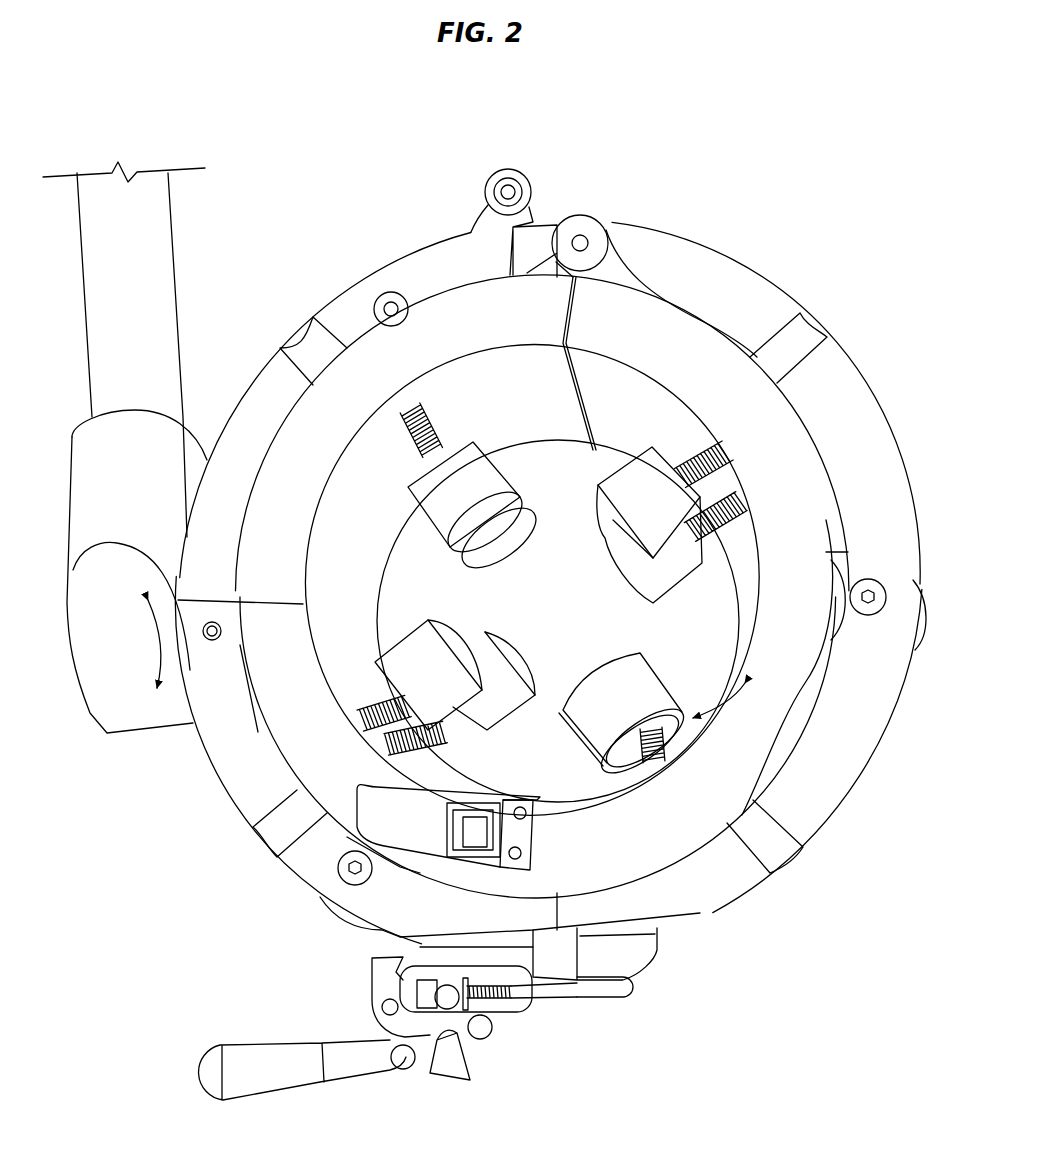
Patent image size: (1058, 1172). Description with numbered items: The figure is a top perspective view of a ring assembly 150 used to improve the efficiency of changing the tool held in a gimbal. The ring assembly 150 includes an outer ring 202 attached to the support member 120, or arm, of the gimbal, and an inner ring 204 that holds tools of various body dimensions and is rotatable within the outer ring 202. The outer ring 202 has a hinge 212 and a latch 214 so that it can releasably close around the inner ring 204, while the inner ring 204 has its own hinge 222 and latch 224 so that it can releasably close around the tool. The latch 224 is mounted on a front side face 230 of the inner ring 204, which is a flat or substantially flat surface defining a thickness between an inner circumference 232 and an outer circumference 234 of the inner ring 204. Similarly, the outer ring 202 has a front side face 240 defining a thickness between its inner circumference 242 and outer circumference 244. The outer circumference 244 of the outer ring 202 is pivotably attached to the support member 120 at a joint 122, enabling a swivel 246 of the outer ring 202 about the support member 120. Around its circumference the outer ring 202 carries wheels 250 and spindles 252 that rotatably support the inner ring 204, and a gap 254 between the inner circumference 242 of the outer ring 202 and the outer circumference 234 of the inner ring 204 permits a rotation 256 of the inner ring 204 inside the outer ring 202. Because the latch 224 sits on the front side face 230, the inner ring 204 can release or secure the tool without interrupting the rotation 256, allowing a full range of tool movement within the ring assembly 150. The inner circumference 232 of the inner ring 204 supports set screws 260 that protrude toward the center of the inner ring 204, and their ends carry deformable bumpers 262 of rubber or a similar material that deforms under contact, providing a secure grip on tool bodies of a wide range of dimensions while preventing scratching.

The support member 120 is at (148, 233).
The joint 122 is at (193, 730).
The ring assembly 150 is at (806, 1057).
The outer ring 202 is at (367, 272).
The inner ring 204 is at (346, 340).
The hinge 212 is at (512, 181).
The latch 214 is at (345, 998).
The hinge 222 is at (583, 215).
The latch 224 is at (352, 782).
The front side face 230 is at (532, 537).
The inner circumference 232 is at (644, 378).
The outer circumference 234 is at (703, 313).
The front side face 240 is at (581, 591).
The inner circumference 242 is at (824, 470).
The outer circumference 244 is at (893, 423).
The swivel 246 is at (146, 632).
The wheels 250 is at (917, 597).
The spindles 252 is at (869, 592).
The gap 254 is at (812, 690).
The rotation 256 is at (723, 712).
The set screws 260 is at (700, 522).
The deformable bumpers 262 is at (607, 520).